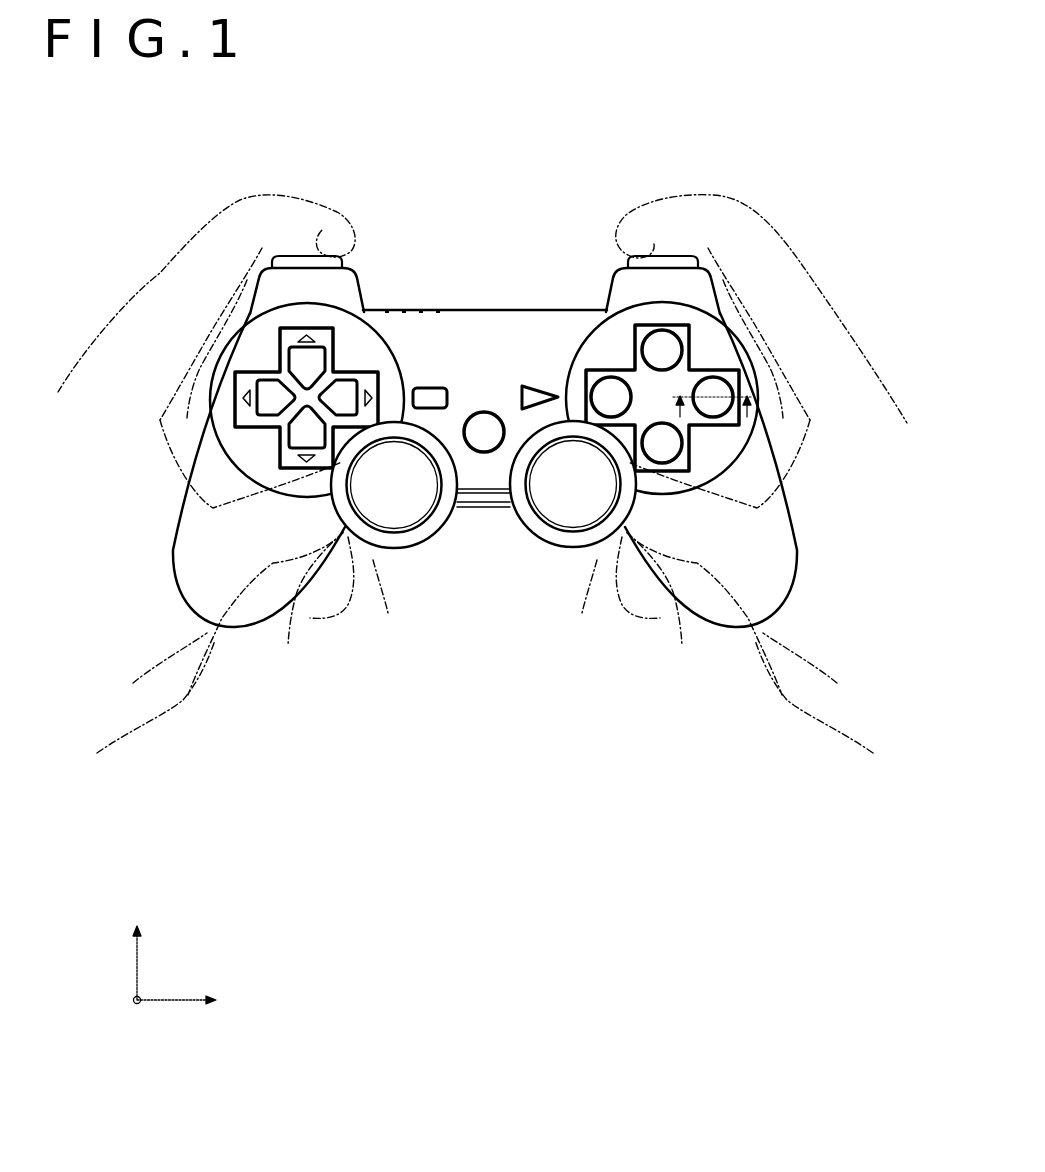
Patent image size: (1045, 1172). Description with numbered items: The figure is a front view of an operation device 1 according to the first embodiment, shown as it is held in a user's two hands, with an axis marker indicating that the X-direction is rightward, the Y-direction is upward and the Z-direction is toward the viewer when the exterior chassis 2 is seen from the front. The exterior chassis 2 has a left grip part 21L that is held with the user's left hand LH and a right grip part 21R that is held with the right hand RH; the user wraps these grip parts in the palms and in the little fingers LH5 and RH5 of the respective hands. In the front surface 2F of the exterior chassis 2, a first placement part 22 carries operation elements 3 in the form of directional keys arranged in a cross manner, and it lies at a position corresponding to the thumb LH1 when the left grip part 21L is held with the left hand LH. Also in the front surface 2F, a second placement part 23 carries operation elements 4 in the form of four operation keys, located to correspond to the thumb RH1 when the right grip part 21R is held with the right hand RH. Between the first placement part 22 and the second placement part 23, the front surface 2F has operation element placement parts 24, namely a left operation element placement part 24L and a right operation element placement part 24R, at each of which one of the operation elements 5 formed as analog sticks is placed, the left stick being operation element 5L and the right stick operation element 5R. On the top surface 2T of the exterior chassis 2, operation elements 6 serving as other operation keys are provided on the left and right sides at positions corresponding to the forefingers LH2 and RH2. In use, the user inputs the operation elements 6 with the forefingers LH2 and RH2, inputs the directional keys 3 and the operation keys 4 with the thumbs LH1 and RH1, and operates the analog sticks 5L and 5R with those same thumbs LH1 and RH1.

The operation device 1 is at (833, 130).
The exterior chassis 2 is at (489, 399).
The top surface 2T is at (537, 245).
The front surface 2F is at (479, 324).
The operation elements 3 is at (312, 353).
The operation elements 4 is at (655, 356).
The operation elements 5 is at (484, 520).
The operation element 5L is at (434, 548).
The operation element 5R is at (542, 546).
The operation elements 6 is at (319, 262).
The left grip part 21L is at (195, 550).
The right grip part 21R is at (775, 550).
The first placement part 22 is at (238, 347).
The second placement part 23 is at (722, 344).
The operation element placement parts 24 is at (483, 533).
The left operation element placement part 24L is at (375, 550).
The right operation element placement part 24R is at (595, 550).
The left hand LH is at (182, 708).
The thumb LH1 is at (290, 607).
The forefinger LH2 is at (264, 196).
The little finger LH5 is at (345, 628).
The right hand RH is at (810, 717).
The thumb RH1 is at (718, 620).
The forefinger RH2 is at (702, 196).
The little finger RH5 is at (630, 625).